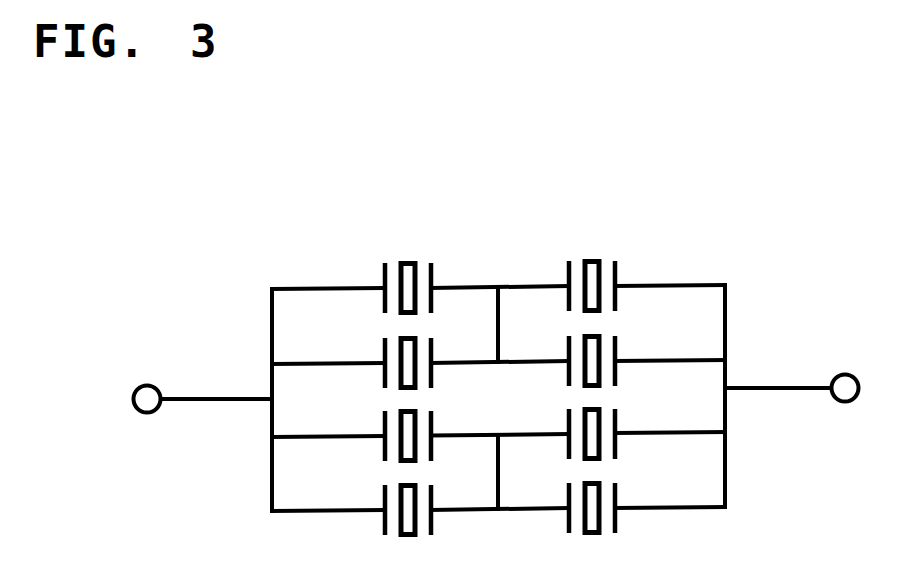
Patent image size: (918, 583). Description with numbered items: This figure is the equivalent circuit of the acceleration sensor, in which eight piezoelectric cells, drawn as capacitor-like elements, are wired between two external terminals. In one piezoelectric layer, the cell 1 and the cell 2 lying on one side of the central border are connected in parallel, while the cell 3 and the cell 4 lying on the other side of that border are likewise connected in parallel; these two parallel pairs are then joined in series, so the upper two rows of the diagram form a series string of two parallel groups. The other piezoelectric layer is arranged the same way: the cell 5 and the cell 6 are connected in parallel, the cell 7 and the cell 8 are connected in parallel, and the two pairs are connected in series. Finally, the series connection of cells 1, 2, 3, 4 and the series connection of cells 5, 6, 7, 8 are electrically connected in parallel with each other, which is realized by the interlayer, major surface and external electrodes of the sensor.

The cell 1 is at (374, 268).
The cell 2 is at (371, 347).
The cell 3 is at (621, 263).
The cell 4 is at (621, 347).
The cell 5 is at (371, 423).
The cell 6 is at (371, 499).
The cell 7 is at (622, 422).
The cell 8 is at (622, 496).